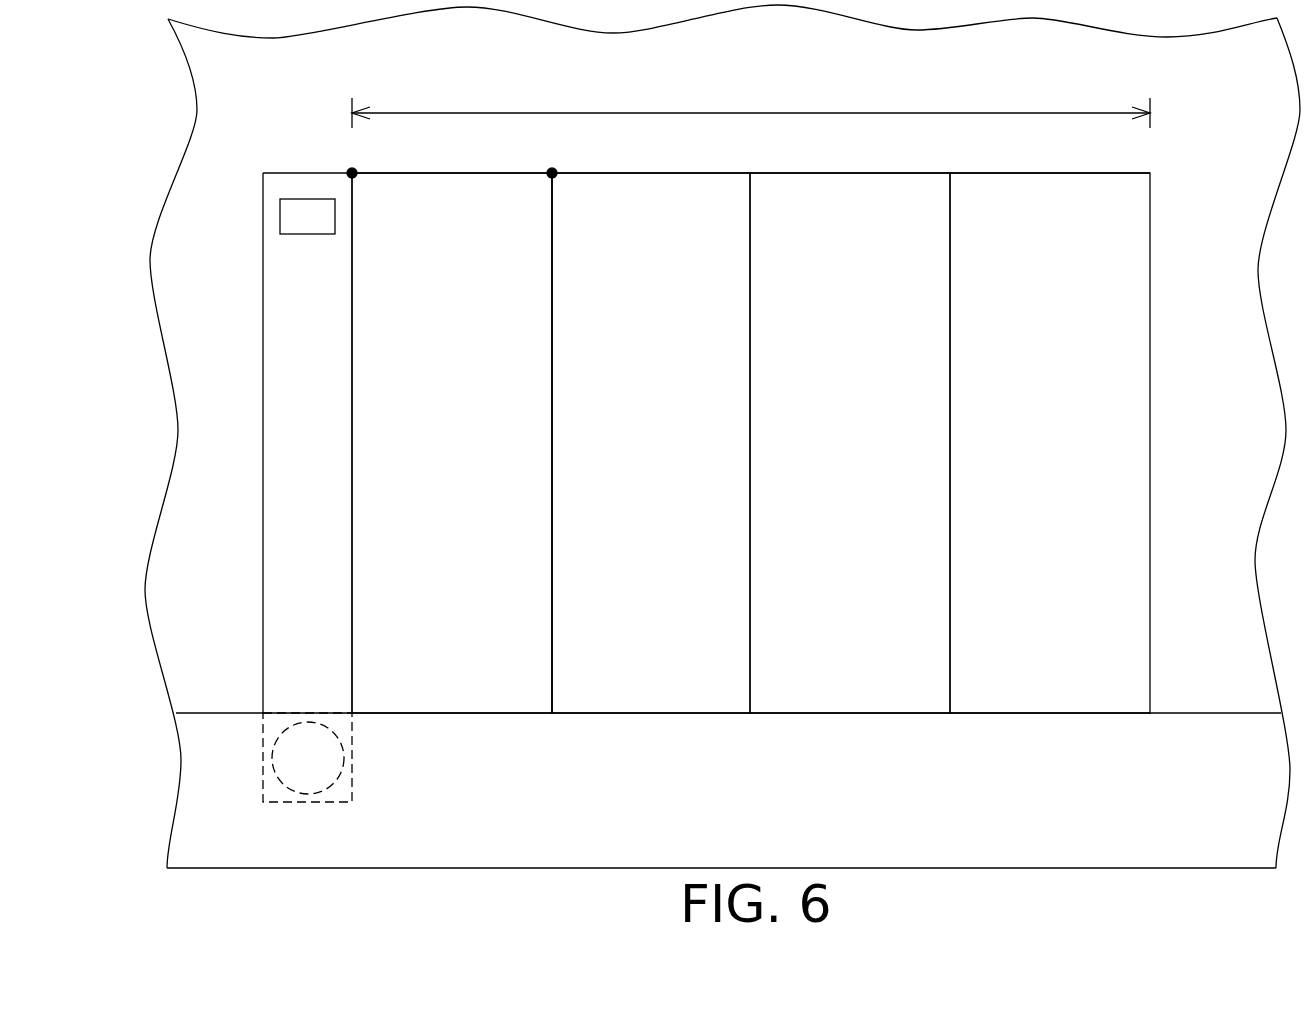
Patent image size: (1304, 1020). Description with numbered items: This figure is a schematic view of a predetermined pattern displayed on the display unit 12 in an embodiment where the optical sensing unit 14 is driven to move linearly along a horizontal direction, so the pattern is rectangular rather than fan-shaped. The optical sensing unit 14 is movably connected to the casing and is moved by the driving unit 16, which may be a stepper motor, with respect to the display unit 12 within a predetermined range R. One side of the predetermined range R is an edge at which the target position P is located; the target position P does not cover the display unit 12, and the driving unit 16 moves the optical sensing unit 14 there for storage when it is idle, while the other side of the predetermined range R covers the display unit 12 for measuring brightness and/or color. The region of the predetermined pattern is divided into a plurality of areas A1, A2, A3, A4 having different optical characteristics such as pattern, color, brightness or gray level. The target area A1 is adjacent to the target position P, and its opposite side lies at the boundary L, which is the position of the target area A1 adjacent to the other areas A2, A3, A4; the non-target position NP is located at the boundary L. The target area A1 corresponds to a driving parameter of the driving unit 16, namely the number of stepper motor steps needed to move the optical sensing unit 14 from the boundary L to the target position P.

The display unit 12 is at (228, 107).
The optical sensing unit 14 is at (297, 368).
The driving unit 16 is at (298, 757).
The target area A1 is at (449, 193).
The area A2 is at (647, 193).
The area A3 is at (847, 193).
The area A4 is at (1046, 193).
The target position P is at (352, 158).
The non-target position NP is at (551, 157).
The boundary L is at (552, 640).
The predetermined range R is at (751, 104).